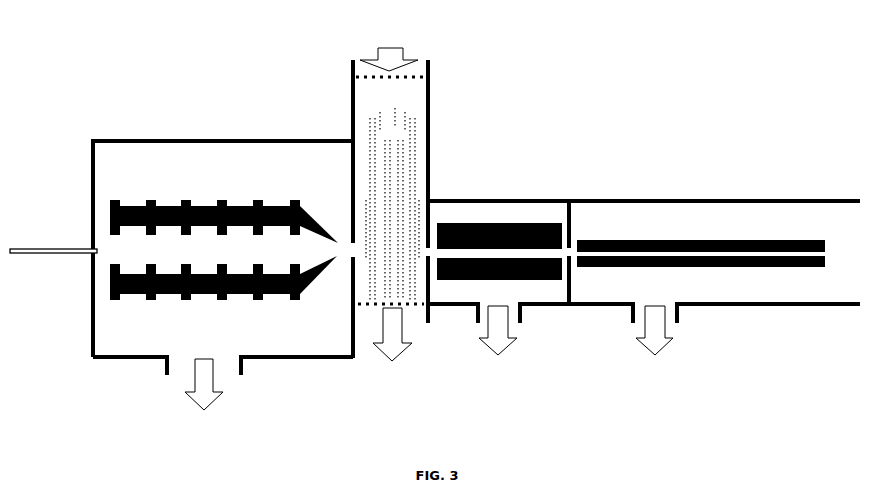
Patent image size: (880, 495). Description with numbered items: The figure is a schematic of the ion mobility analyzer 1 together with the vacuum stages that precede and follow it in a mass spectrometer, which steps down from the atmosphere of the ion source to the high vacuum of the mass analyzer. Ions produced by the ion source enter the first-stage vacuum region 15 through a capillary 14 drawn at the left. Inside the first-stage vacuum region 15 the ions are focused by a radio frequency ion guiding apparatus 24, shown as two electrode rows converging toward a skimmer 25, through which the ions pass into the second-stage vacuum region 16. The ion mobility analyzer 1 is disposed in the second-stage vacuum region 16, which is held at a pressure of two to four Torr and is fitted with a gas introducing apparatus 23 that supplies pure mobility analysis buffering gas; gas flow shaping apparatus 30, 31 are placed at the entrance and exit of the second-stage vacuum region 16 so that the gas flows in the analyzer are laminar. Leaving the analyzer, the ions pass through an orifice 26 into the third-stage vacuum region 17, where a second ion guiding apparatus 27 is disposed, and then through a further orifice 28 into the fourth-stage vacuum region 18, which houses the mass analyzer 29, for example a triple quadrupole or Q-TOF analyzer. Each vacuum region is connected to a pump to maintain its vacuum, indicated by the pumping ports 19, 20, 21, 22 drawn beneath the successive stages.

The ion mobility analyzer 1 is at (418, 162).
The capillary 14 is at (53, 240).
The first-stage vacuum region 15 is at (209, 165).
The second-stage vacuum region 16 is at (383, 290).
The third-stage vacuum region 17 is at (489, 222).
The fourth-stage vacuum region 18 is at (690, 220).
The first pumping port 19 is at (204, 396).
The second pumping port 20 is at (392, 346).
The third pumping port 21 is at (498, 343).
The fourth pumping port 22 is at (654, 342).
The gas introducing apparatus 23 is at (389, 52).
The radio frequency ion guiding apparatus 24 is at (262, 198).
The skimmer 25 is at (348, 243).
The orifice 26 is at (433, 220).
The second ion guiding apparatus 27 is at (533, 222).
The orifice 28 is at (572, 232).
The mass analyzer 29 is at (758, 240).
The grid electrode 30 is at (416, 76).
The grid electrode 31 is at (410, 305).